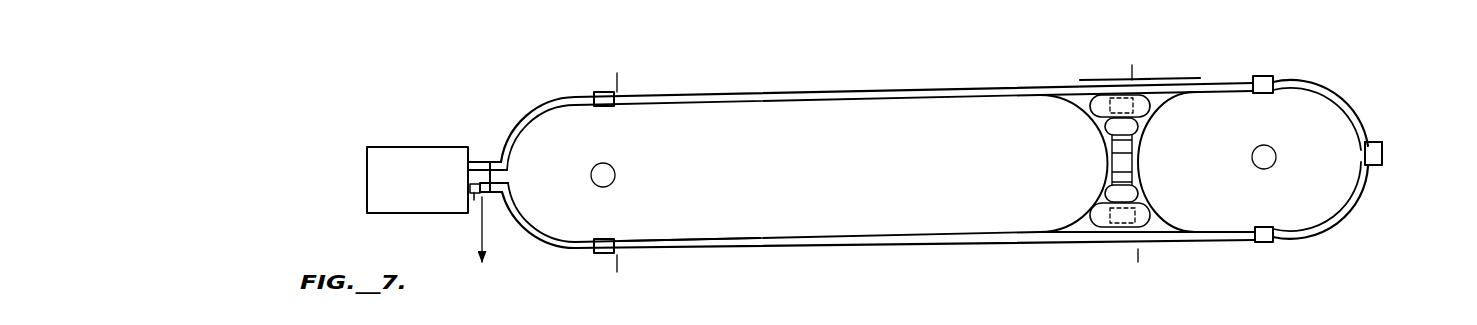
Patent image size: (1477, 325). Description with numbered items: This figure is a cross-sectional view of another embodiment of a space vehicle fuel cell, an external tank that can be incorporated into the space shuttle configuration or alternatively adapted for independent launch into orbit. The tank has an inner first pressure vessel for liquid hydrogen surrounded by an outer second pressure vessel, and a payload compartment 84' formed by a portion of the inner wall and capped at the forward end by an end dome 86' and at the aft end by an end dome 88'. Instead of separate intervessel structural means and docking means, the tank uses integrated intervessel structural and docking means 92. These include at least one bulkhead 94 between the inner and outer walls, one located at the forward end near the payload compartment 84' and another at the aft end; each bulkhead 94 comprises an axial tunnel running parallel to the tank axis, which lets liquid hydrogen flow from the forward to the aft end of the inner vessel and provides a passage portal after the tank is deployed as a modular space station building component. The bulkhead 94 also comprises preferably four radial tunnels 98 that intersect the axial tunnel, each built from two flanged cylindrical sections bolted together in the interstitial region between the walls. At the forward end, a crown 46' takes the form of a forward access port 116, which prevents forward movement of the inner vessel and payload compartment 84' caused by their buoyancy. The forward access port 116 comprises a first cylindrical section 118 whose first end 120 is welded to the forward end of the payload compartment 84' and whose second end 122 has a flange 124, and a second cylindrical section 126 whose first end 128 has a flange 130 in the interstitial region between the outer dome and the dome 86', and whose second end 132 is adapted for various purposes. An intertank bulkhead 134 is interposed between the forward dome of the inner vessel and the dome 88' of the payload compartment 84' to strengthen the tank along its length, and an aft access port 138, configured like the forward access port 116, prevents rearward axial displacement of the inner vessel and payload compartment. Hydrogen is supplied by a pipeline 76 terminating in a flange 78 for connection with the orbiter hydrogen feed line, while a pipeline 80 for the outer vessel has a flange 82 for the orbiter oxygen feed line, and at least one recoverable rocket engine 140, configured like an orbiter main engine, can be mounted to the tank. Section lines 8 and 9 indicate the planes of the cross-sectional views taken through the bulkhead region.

The recoverable rocket engine 140 is at (381, 146).
The aft access port 138 is at (496, 158).
The radial tunnel 98 is at (594, 96).
The bulkhead 94 is at (607, 223).
The section line 8 is at (616, 73).
The section line 9 is at (1131, 65).
The integrated intervessel structural and docking means 92 is at (703, 79).
The intertank bulkhead 134 is at (1150, 82).
The end dome 88' is at (1118, 185).
The payload compartment 84' is at (1190, 183).
The end dome 86' is at (1333, 206).
The first cylindrical section 118 is at (1370, 139).
The crown 46' is at (1417, 117).
The first end 128 is at (1381, 144).
The second end 132 is at (1383, 150).
The flange 130 is at (1382, 160).
The second cylindrical section 126 is at (1378, 167).
The forward access port 116 is at (1374, 168).
The second end 122 is at (1364, 149).
The first end 120 is at (1365, 158).
The flange 124 is at (1364, 165).
The pipeline 76 is at (468, 201).
The flange 78 is at (480, 200).
The pipeline 80 is at (483, 200).
The flange 82 is at (474, 212).